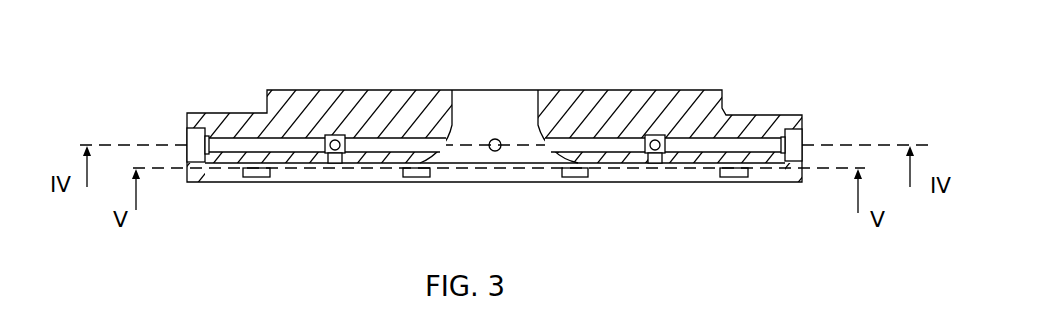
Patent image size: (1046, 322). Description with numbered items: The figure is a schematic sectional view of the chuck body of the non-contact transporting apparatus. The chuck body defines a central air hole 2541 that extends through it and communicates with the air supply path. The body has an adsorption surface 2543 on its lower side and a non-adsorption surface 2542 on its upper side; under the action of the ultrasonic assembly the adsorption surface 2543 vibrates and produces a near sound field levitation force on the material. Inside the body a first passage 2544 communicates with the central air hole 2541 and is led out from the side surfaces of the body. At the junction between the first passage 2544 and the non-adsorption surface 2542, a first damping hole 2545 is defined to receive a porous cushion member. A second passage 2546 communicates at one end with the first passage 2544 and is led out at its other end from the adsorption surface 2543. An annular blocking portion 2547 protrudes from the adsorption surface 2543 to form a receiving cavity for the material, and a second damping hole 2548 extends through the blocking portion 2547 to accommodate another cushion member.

The central air hole 2541 is at (495, 124).
The non-adsorption surface 2542 is at (182, 125).
The adsorption surface 2543 is at (304, 170).
The first passage 2544 is at (713, 140).
The first damping hole 2545 is at (787, 139).
The second passage 2546 is at (333, 158).
The blocking portion 2547 is at (790, 176).
The second damping hole 2548 is at (418, 177).